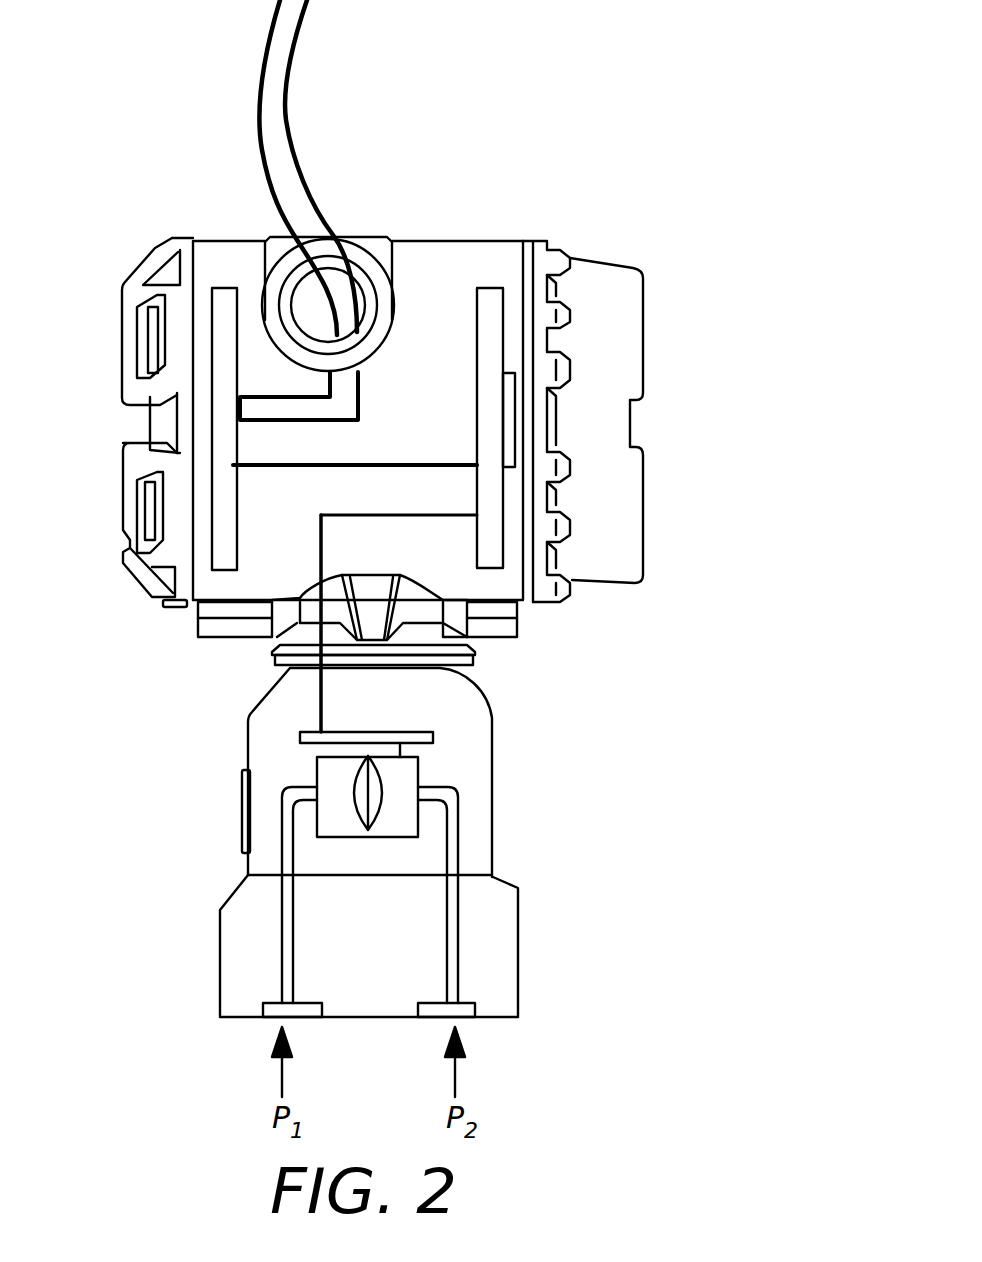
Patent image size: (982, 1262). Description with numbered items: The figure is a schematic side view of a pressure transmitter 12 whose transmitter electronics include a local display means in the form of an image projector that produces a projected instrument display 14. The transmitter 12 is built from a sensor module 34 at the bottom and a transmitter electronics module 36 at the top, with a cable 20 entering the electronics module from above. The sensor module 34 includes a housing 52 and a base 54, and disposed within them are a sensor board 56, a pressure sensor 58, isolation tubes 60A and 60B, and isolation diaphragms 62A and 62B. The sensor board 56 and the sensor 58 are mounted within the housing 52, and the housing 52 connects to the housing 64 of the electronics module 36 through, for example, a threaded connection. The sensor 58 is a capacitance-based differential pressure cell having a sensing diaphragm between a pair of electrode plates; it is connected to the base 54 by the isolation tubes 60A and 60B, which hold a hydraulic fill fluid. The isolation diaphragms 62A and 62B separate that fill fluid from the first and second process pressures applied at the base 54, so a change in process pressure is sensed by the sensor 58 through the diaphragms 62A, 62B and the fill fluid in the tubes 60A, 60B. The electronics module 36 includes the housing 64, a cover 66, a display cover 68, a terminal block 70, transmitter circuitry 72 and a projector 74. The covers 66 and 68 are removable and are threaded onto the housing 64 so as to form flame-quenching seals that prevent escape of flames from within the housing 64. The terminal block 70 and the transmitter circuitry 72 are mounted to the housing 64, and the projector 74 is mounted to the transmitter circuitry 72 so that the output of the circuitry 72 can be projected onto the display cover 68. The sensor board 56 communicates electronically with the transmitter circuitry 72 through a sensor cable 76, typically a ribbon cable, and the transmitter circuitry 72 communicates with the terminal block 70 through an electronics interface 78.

The pressure transmitter 12 is at (138, 187).
The projected instrument display 14 is at (660, 323).
The cable 20 is at (325, 67).
The sensor module 34 is at (521, 794).
The transmitter electronics module 36 is at (492, 246).
The housing 52 is at (443, 718).
The base 54 is at (502, 970).
The sensor board 56 is at (300, 736).
The pressure sensor 58 is at (403, 775).
The isolation tube 60A is at (472, 995).
The isolation tube 60B is at (290, 908).
The isolation diaphragm 62A is at (458, 912).
The isolation diaphragm 62B is at (270, 997).
The housing 64 is at (418, 257).
The cover 66 is at (135, 458).
The display cover 68 is at (628, 563).
The terminal block 70 is at (227, 290).
The transmitter circuitry 72 is at (490, 308).
The projector 74 is at (512, 422).
The sensor cable 76 is at (320, 705).
The electronics interface 78 is at (386, 467).